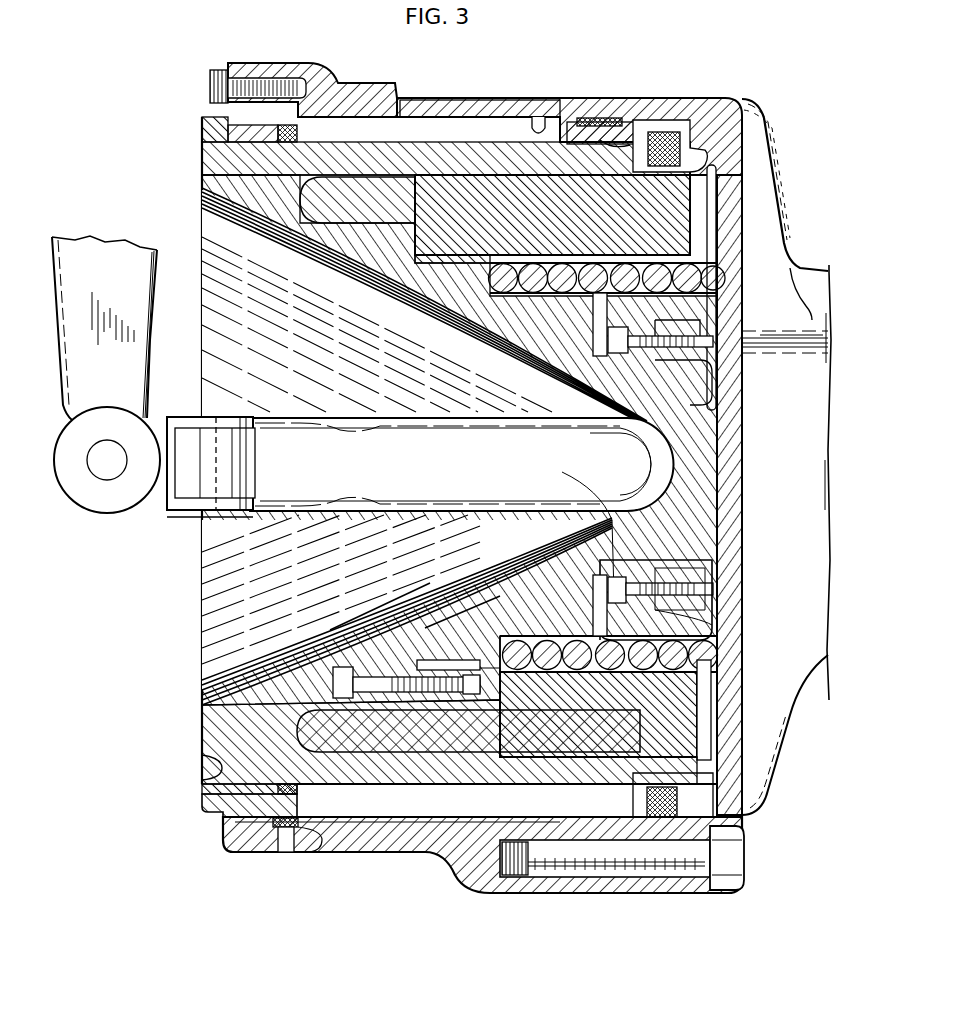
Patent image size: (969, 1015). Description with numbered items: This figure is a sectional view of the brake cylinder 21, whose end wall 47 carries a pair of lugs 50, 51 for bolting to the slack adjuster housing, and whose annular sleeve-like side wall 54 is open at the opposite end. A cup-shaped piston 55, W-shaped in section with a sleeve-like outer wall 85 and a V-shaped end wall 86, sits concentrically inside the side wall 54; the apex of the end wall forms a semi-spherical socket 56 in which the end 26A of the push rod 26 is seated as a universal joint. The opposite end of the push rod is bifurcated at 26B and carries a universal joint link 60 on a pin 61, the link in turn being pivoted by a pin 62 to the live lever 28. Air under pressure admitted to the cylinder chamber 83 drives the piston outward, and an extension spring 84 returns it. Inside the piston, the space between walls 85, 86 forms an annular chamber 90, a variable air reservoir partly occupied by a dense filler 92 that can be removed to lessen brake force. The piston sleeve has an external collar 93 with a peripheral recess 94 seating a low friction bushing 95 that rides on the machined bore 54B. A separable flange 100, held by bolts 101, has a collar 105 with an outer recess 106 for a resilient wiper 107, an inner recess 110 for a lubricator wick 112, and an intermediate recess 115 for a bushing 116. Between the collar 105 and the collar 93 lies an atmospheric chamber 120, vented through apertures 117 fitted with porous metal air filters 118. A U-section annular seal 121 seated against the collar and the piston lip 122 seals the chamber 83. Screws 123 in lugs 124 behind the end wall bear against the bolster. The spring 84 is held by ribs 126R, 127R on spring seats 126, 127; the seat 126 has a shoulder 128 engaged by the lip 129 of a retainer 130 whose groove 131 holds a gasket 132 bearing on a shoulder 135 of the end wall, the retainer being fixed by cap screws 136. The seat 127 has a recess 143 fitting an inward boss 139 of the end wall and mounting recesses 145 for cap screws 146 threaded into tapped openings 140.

The cylinder 21 is at (712, 92).
The push rod 26 is at (462, 464).
The end of push rod 26A is at (622, 464).
The bifurcated end of push rod 26B is at (210, 512).
The live lever 28 is at (104, 328).
The end wall 47 is at (730, 480).
The lug 50 is at (790, 285).
The lug 51 is at (795, 674).
The side wall 54 is at (476, 104).
The machined bore 54B is at (546, 122).
The piston 55 is at (430, 140).
The socket 56 is at (649, 429).
The universal joint link 60 is at (178, 427).
The pin 61 is at (220, 442).
The pin 62 is at (105, 470).
The cylinder chamber 83 is at (712, 202).
The extension spring 84 is at (599, 268).
The piston side wall 85 is at (358, 162).
The piston end wall 86 is at (418, 615).
The piston chamber 90 is at (385, 215).
The filler 92 is at (552, 219).
The collar 93 is at (630, 142).
The peripheral recess 94 is at (605, 126).
The bushing 95 is at (590, 121).
The annular flange 100 is at (228, 826).
The bolt 101 is at (216, 70).
The collar 105 is at (254, 75).
The annular recess 106 is at (210, 802).
The resilient wiper 107 is at (205, 760).
The annular recess 110 is at (297, 790).
The lubricator wick 112 is at (355, 705).
The annular recess 115 is at (235, 127).
The bushing 116 is at (283, 134).
The aperture 117 is at (283, 832).
The porous metal air filter 118 is at (306, 842).
The atmospheric chamber 120 is at (462, 845).
The annular seal 121 is at (647, 773).
The annular lip 122 is at (700, 166).
The screw 123 is at (730, 858).
The lug 124 is at (665, 898).
The spring seat 126 is at (560, 632).
The ribs 126R is at (575, 242).
The spring seat 127 is at (640, 580).
The ribs 127R is at (648, 266).
The annular shoulder 128 is at (470, 610).
The lip 129 is at (508, 672).
The spring seat retainer 130 is at (503, 702).
The annular groove 131 is at (500, 700).
The gasket 132 is at (470, 700).
The annular shoulder 135 is at (430, 700).
The cap screw 136 is at (388, 698).
The boss 139 is at (700, 615).
The tapped opening 140 is at (700, 575).
The annular recess 143 is at (700, 320).
The mounting recess 145 is at (598, 640).
The cap screw 146 is at (572, 525).